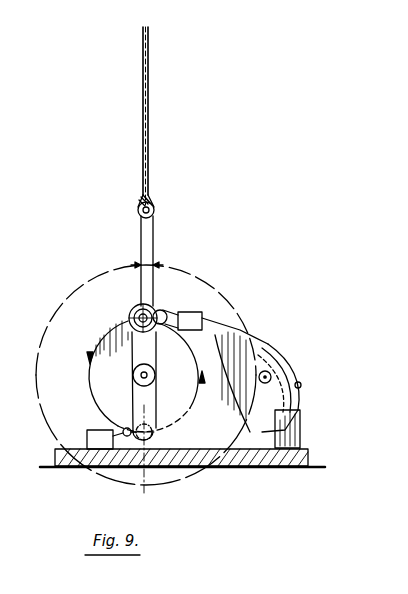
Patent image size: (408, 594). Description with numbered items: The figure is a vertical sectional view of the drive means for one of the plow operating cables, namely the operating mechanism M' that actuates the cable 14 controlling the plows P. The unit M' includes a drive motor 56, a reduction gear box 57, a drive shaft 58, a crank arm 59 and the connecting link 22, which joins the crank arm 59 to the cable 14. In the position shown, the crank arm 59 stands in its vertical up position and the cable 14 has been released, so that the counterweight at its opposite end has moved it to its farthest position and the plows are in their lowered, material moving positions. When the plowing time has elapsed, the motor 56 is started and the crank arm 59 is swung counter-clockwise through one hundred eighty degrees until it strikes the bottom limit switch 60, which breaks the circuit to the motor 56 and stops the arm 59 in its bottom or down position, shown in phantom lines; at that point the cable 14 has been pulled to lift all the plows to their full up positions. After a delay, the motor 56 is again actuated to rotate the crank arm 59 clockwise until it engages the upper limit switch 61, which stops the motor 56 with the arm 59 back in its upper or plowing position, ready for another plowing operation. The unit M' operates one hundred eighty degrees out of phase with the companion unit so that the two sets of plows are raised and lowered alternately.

The cable 14 is at (150, 110).
The connecting link 22 is at (153, 232).
The drive motor 56 is at (302, 372).
The reduction gear box 57 is at (235, 336).
The drive shaft 58 is at (152, 376).
The crank arm 59 is at (128, 362).
The bottom limit switch 60 is at (88, 436).
The upper limit switch 61 is at (195, 312).
The operating mechanism M' is at (264, 369).